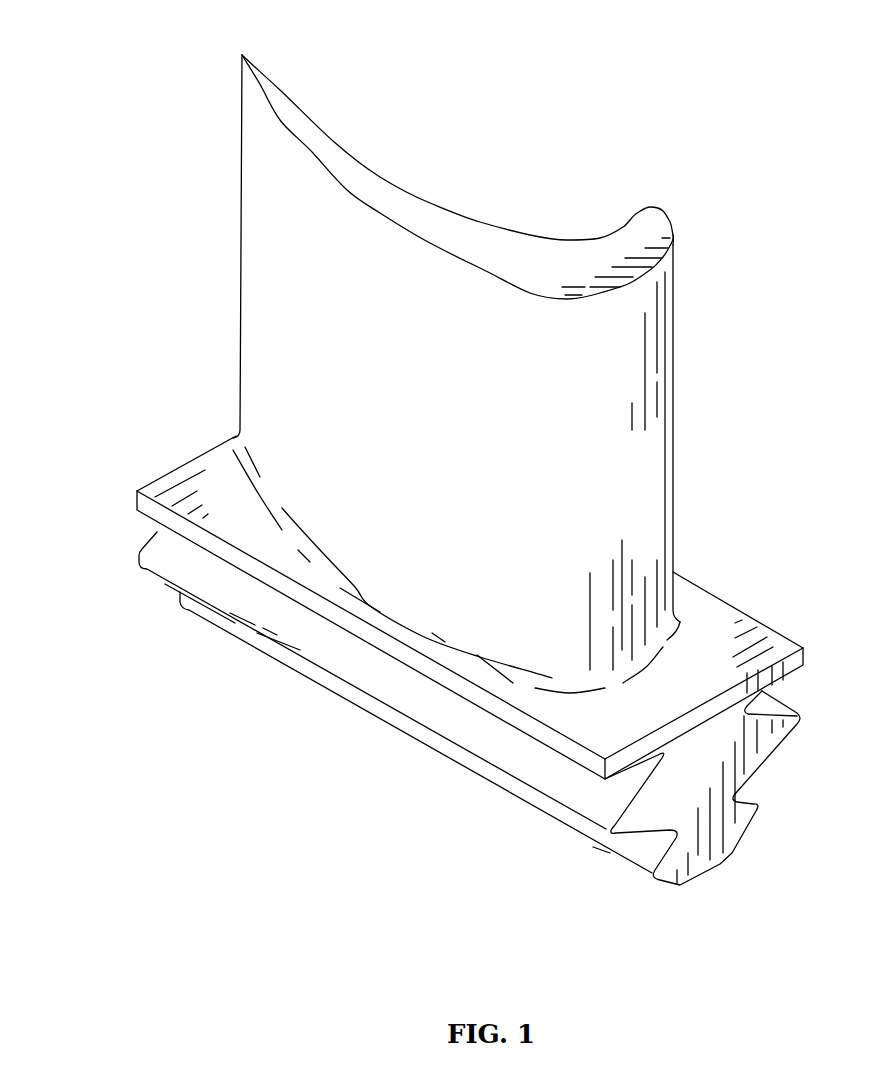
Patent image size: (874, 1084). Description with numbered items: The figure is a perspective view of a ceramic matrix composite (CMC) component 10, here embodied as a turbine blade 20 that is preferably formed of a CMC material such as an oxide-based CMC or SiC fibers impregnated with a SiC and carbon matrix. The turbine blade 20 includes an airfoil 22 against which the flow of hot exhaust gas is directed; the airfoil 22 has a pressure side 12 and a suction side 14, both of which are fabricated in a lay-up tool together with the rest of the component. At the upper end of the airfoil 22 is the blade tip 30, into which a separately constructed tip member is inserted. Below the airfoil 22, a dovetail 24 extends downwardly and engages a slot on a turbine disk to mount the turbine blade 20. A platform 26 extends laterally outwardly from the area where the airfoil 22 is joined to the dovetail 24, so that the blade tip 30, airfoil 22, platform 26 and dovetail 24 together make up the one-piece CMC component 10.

The CMC component 10 is at (668, 92).
The pressure side 12 is at (470, 217).
The suction side 14 is at (291, 367).
The turbine blade 20 is at (142, 285).
The airfoil 22 is at (255, 190).
The dovetail 24 is at (140, 548).
The platform 26 is at (182, 488).
The blade tip 30 is at (327, 153).